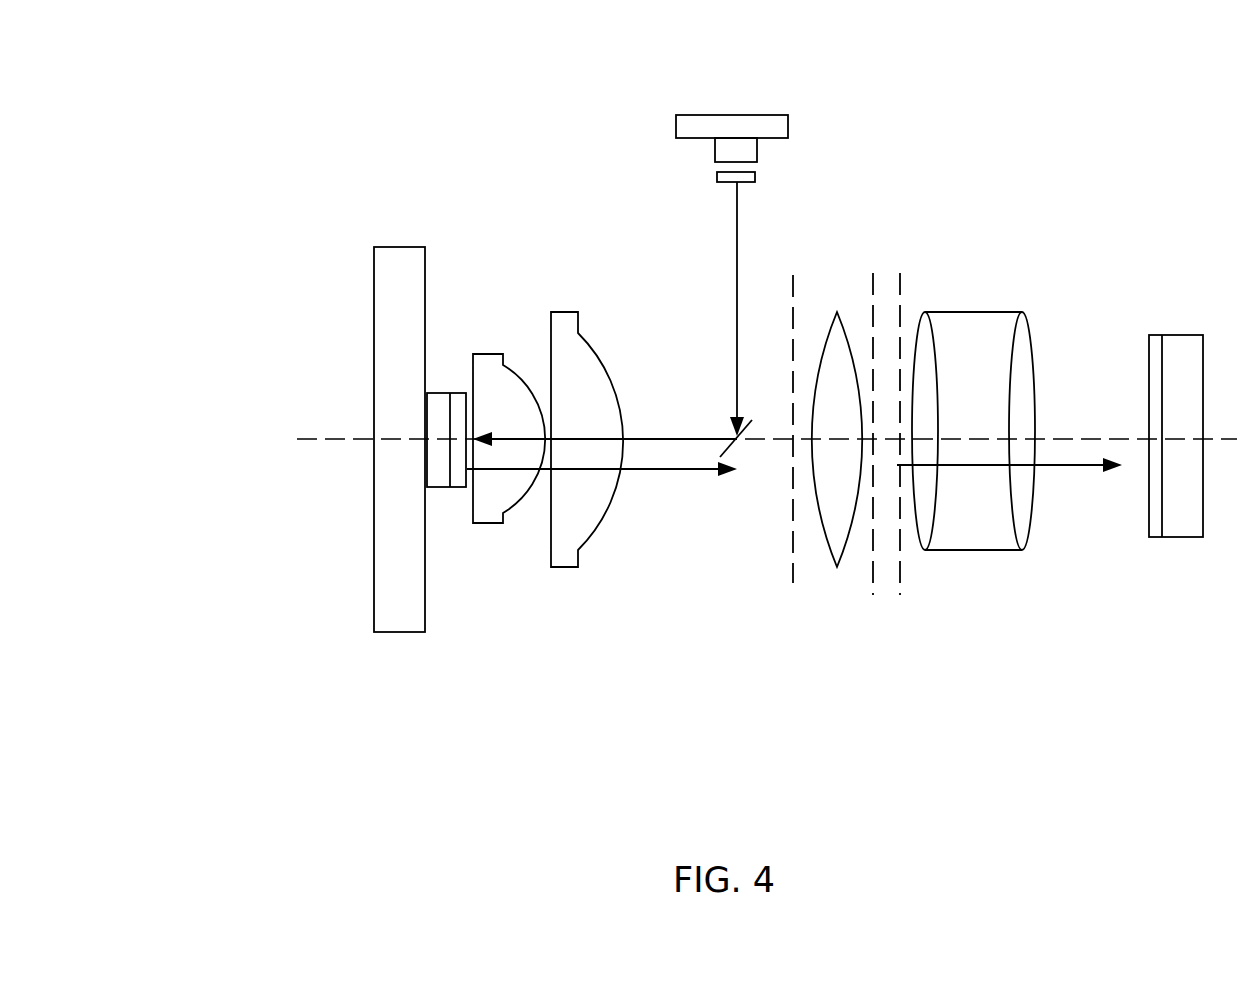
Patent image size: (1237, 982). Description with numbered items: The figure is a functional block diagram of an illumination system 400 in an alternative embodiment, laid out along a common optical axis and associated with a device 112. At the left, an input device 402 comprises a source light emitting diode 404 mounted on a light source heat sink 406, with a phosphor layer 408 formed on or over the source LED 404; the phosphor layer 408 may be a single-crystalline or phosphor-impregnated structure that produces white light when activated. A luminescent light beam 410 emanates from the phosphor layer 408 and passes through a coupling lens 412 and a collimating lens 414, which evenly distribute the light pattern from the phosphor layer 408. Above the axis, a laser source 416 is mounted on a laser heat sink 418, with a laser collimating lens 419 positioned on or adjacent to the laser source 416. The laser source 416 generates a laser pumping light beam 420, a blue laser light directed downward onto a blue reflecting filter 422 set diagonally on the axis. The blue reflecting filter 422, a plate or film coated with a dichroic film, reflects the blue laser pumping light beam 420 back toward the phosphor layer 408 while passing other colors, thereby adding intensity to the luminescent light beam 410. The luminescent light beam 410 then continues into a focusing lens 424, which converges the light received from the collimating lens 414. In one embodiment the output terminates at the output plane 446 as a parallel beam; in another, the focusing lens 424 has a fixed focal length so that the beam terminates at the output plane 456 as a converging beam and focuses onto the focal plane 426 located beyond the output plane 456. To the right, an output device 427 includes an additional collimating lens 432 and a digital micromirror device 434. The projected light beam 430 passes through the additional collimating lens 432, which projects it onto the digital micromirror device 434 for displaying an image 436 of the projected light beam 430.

The illumination system 400 is at (340, 66).
The device 112 is at (262, 774).
The input device 402 is at (520, 434).
The source light emitting diode 404 is at (438, 477).
The light source heat sink 406 is at (399, 439).
The phosphor layer 408 is at (457, 402).
The luminescent light beam 410 is at (672, 469).
The coupling lens 412 is at (493, 387).
The collimating lens 414 is at (615, 445).
The laser source 416 is at (728, 155).
The laser heat sink 418 is at (762, 125).
The laser collimating lens 419 is at (727, 177).
The laser pumping light beam 420 is at (736, 313).
The blue reflecting filter 422 is at (729, 446).
The focusing lens 424 is at (838, 370).
The focal plane 426 is at (900, 273).
The output device 427 is at (1031, 474).
The projected light beam 430 is at (1062, 465).
The additional collimating lens 432 is at (965, 328).
The digital micromirror device 434 is at (1188, 508).
The image 436 is at (1155, 365).
The output plane 446 is at (793, 583).
The output plane 456 is at (873, 273).